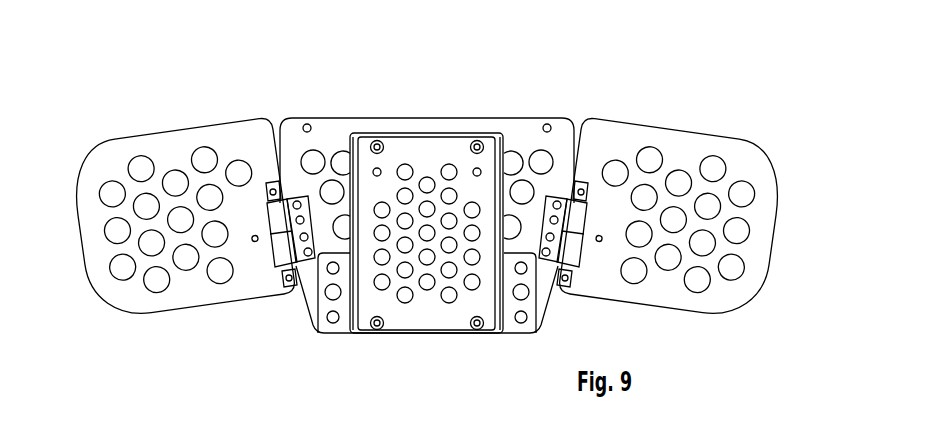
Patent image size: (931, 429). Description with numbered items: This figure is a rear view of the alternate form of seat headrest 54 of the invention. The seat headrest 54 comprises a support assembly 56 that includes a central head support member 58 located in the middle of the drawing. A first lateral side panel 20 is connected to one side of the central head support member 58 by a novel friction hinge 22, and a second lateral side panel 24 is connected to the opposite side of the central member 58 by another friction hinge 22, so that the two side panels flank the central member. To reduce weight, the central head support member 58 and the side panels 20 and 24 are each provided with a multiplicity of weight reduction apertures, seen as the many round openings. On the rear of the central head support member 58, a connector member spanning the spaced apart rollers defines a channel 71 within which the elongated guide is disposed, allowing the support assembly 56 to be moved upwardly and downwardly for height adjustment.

The first lateral side panel 20 is at (697, 143).
The friction hinge 22 is at (271, 270).
The second lateral side panel 24 is at (173, 142).
The seat headrest 54 is at (534, 105).
The support assembly 56 is at (578, 119).
The central head support member 58 is at (357, 133).
The channel 71 is at (412, 340).